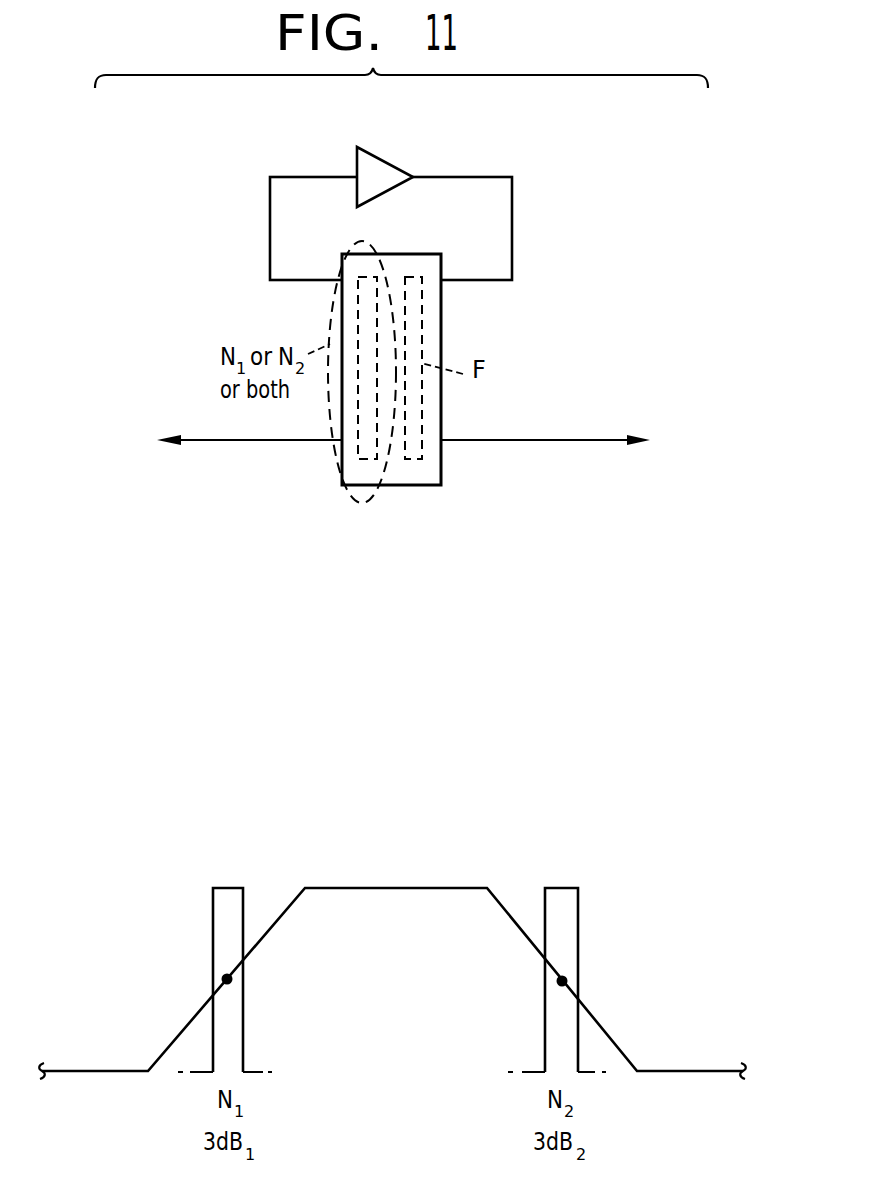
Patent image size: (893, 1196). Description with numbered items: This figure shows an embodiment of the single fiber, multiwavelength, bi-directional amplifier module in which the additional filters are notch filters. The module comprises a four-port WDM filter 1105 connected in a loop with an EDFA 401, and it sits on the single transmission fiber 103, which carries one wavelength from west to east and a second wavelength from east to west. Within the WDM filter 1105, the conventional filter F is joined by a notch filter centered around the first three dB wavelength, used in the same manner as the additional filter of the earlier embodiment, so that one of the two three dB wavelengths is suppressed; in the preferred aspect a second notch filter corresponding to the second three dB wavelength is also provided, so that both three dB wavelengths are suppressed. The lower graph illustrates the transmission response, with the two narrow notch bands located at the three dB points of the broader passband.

The EDFA 401 is at (392, 163).
The 4-port WDM filter 1105 is at (405, 487).
The transmission fiber 103 is at (398, 441).